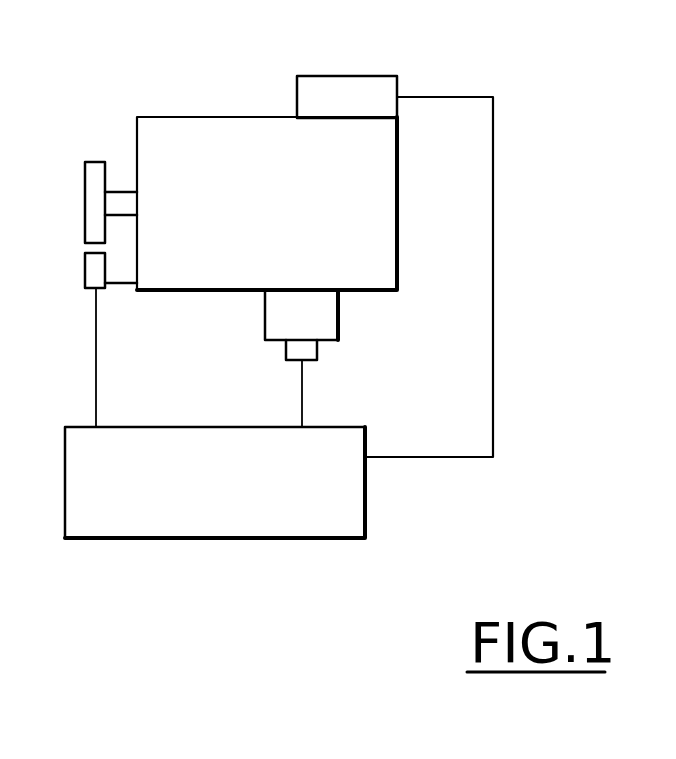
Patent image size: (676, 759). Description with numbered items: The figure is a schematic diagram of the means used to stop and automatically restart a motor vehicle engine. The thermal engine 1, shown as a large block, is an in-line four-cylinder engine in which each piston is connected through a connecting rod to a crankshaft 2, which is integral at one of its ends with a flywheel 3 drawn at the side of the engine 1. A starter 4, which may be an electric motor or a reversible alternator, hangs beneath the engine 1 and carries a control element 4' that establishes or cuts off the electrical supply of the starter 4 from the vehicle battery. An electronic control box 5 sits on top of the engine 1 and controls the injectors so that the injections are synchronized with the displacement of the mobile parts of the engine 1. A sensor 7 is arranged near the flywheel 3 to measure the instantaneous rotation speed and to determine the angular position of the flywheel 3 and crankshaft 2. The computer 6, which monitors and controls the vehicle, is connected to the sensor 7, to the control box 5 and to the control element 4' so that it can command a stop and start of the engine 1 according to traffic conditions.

The thermal engine 1 is at (212, 158).
The crankshaft 2 is at (118, 203).
The flywheel 3 is at (90, 218).
The starter 4 is at (273, 319).
The control element 4' is at (277, 383).
The electronic control box 5 is at (350, 105).
The computer 6 is at (166, 513).
The sensor 7 is at (92, 272).